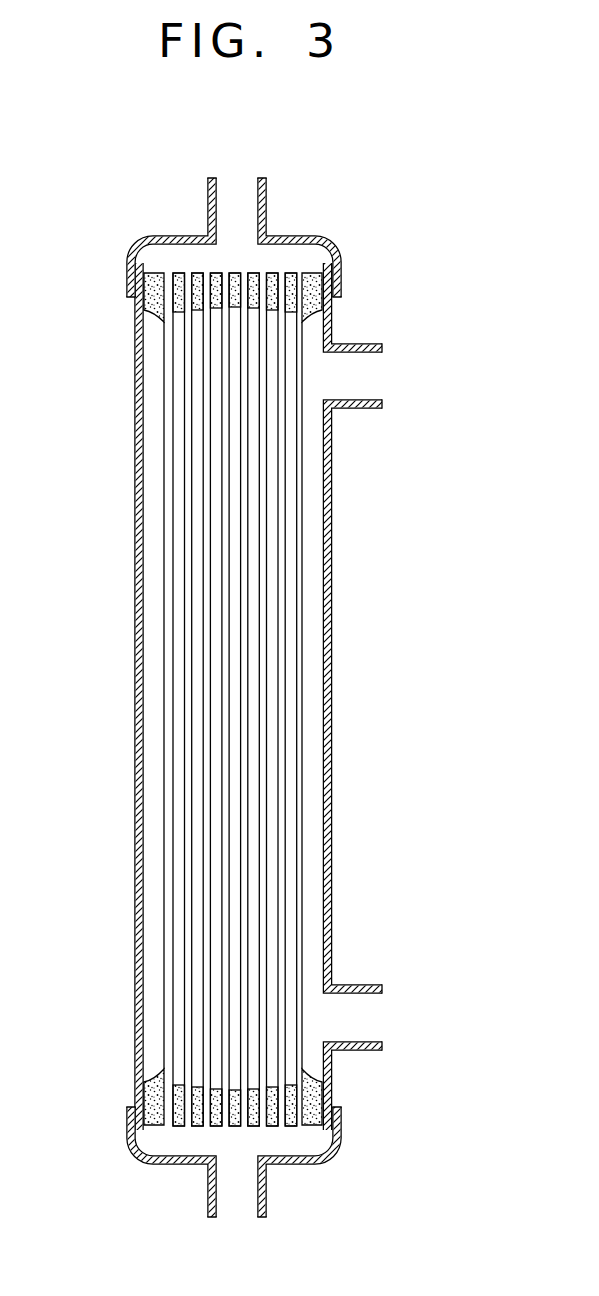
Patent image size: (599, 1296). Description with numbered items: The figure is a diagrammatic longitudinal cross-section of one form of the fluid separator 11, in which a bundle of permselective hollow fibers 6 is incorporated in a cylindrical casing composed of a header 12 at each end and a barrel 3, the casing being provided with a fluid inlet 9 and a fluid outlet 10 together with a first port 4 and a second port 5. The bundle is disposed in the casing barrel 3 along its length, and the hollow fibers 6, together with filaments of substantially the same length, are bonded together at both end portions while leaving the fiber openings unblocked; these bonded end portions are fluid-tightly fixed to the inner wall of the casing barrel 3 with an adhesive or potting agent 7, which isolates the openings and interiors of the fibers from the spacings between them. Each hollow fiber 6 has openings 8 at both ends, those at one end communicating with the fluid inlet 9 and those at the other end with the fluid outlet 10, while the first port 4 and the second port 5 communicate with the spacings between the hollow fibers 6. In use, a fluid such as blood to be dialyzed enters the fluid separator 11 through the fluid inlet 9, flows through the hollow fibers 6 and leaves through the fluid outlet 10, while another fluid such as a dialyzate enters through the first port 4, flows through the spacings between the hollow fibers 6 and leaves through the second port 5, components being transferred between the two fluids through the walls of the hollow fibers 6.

The casing barrel 3 is at (134, 830).
The first port 4 is at (377, 382).
The second port 5 is at (373, 1012).
The permselective hollow fibers 6 is at (177, 650).
The adhesive (potting or embedding agent) 7 is at (143, 300).
The openings 8 is at (223, 270).
The fluid inlet 9 is at (245, 170).
The fluid outlet 10 is at (242, 1220).
The fluid separator 11 is at (335, 683).
The header 12 is at (335, 258).